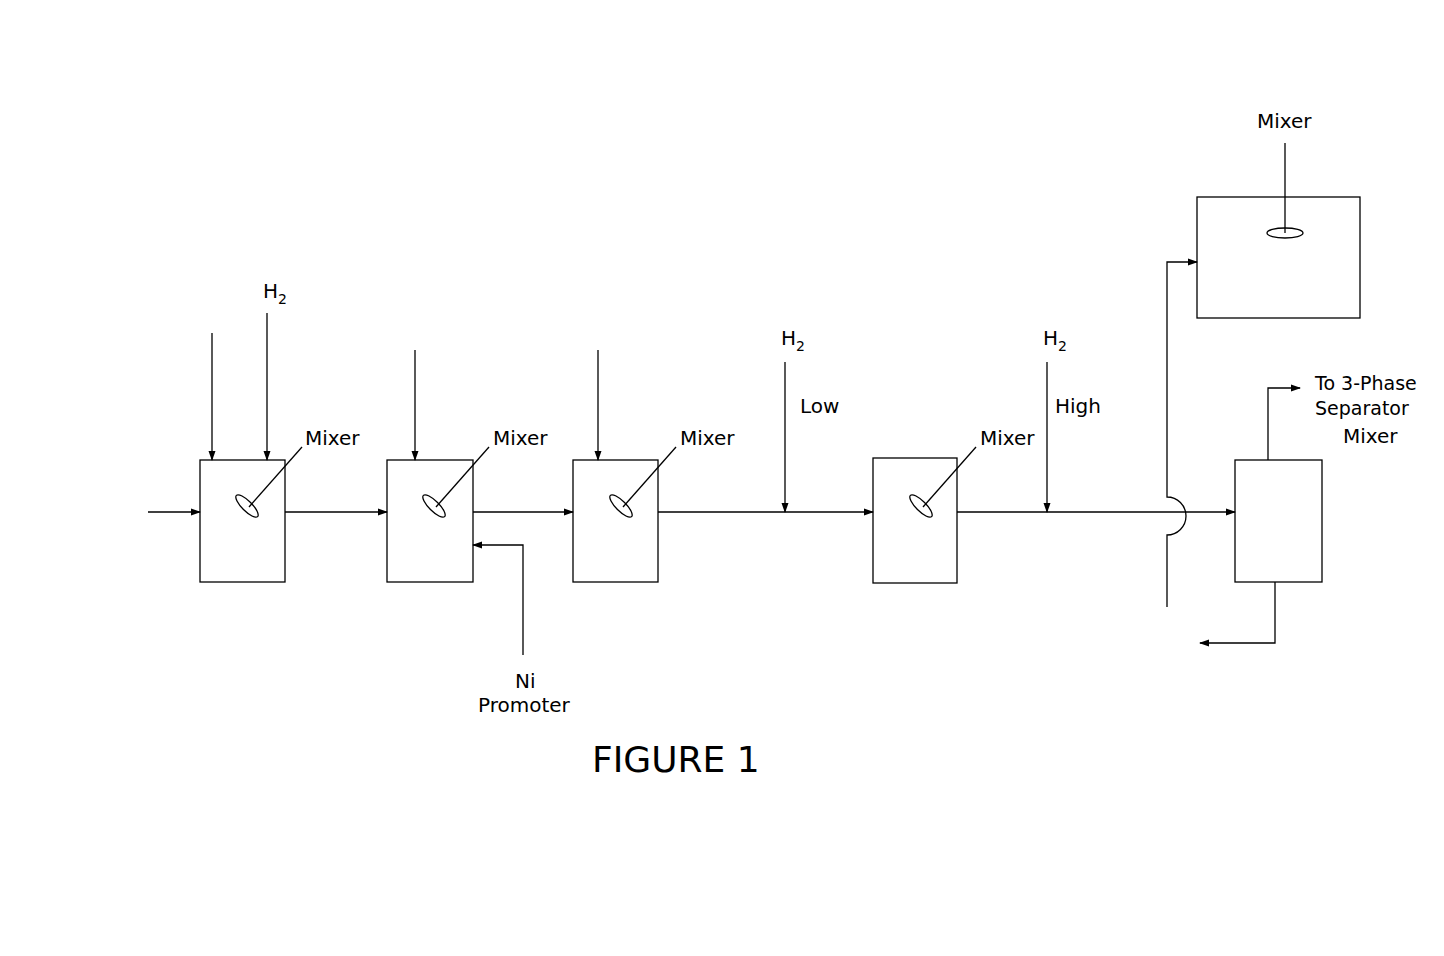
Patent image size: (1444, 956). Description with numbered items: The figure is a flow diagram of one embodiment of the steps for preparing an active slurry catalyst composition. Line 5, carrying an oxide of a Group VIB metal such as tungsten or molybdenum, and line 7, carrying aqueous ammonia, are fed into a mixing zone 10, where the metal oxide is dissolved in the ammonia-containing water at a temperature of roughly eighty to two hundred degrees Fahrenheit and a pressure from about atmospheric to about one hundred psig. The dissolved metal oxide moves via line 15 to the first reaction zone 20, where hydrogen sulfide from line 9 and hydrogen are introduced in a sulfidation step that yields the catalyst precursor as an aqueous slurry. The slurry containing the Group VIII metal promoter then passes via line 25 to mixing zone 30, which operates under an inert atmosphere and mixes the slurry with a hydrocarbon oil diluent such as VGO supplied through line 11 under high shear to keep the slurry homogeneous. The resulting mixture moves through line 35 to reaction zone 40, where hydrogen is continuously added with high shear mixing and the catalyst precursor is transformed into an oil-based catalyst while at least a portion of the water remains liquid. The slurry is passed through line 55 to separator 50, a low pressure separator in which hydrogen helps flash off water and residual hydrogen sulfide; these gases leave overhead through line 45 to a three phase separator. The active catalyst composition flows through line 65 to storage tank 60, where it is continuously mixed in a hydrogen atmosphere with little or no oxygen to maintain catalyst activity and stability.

The line 5 is at (144, 507).
The line 7 is at (201, 383).
The line 9 is at (417, 383).
The mixing zone 10 is at (242, 521).
The line 11 is at (600, 383).
The line 15 is at (336, 499).
The reaction zone 20 is at (430, 521).
The line 25 is at (523, 499).
The mixing zone 30 is at (615, 521).
The line 35 is at (765, 499).
The reaction zone 40 is at (915, 520).
The line 45 is at (1284, 424).
The separator 50 is at (1278, 521).
The line 55 is at (1096, 499).
The storage tank 60 is at (1278, 257).
The line 65 is at (1221, 466).